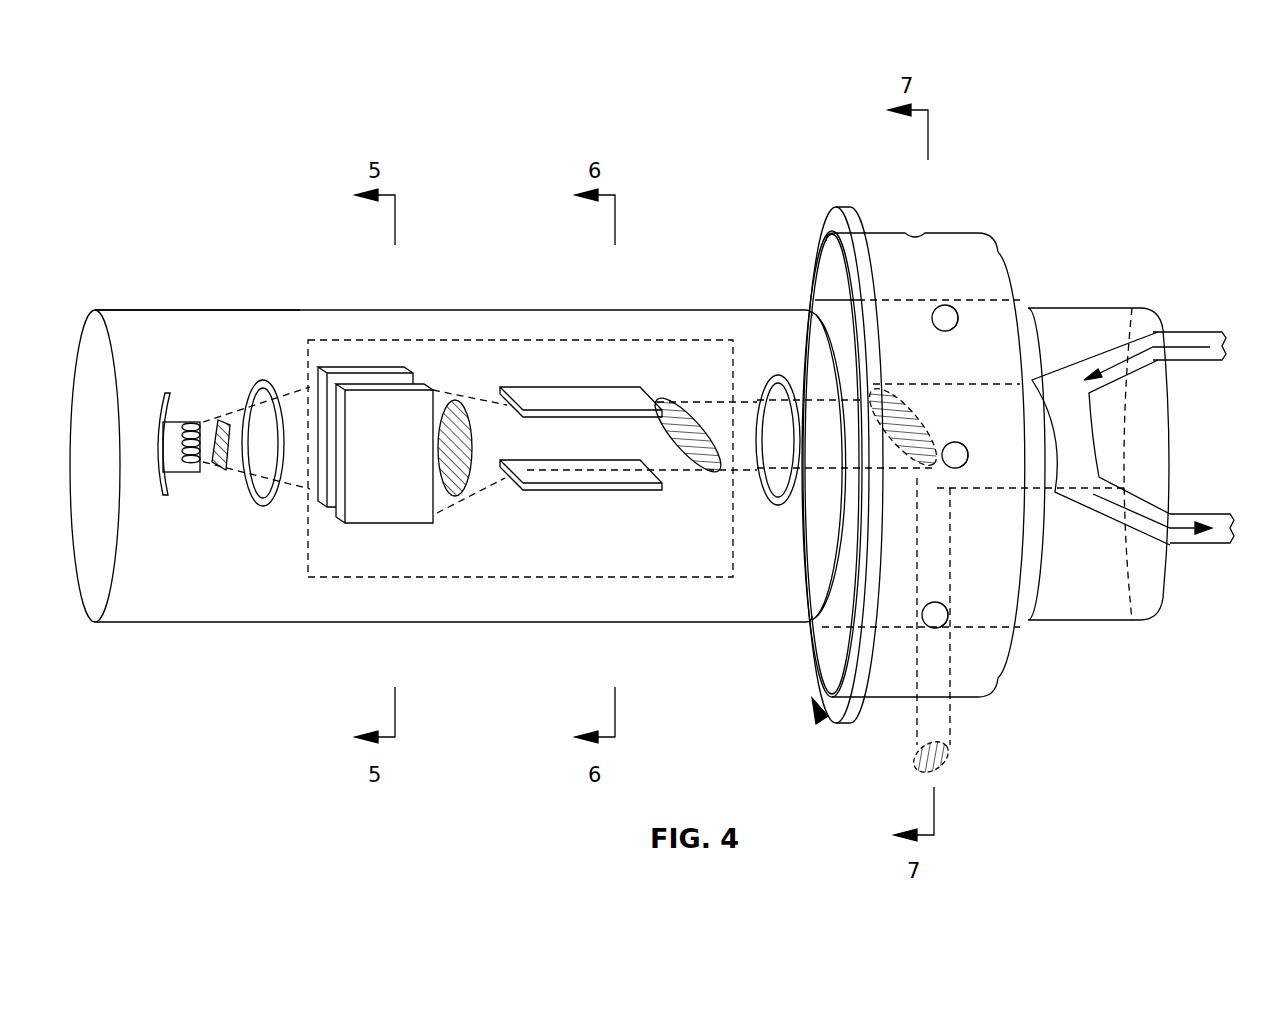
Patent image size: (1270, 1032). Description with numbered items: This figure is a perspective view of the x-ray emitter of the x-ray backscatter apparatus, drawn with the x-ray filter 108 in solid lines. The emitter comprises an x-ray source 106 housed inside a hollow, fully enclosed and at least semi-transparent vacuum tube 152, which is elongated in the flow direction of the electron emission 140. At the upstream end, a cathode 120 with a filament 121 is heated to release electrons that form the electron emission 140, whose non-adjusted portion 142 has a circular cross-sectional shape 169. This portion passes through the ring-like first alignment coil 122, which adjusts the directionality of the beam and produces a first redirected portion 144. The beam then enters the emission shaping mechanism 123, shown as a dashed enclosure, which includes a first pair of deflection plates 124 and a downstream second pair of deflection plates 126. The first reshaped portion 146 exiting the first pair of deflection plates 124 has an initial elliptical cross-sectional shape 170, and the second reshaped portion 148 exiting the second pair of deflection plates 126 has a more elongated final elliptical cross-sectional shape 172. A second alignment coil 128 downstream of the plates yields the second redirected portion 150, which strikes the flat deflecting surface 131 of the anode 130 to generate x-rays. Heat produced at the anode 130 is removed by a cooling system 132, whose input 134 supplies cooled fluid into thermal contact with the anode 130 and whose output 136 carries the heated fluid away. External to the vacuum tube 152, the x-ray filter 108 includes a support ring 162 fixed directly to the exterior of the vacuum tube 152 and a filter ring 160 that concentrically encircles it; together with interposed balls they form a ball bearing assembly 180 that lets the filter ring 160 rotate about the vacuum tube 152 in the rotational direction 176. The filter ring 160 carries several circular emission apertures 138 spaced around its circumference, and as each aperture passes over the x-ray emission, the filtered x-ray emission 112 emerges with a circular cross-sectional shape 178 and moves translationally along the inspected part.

The x-ray source 106 is at (152, 545).
The vacuum tube 152 is at (168, 318).
The second alignment coil 128 is at (772, 379).
The cathode 120 is at (172, 388).
The non-adjusted portion 142 is at (208, 475).
The filament 121 is at (200, 422).
The first alignment coil 122 is at (265, 382).
The first redirected portion 144 is at (297, 473).
The circular cross-sectional shape 169 is at (250, 475).
The emission shaping mechanism 123 is at (386, 580).
The first pair of deflection plates 124 is at (352, 370).
The first reshaped portion 146 is at (460, 505).
The initial elliptical cross-sectional shape 170 is at (467, 480).
The second pair of deflection plates 126 is at (525, 387).
The electron emission 140 is at (478, 380).
The second reshaped portion 148 is at (685, 472).
The final elliptical cross-sectional shape 172 is at (713, 472).
The second redirected portion 150 is at (830, 475).
The x-ray filter 108 is at (813, 226).
The rotational direction 176 is at (826, 236).
The support ring 162 is at (817, 268).
The filter ring 160 is at (958, 233).
The ball bearing assembly 180 is at (1022, 192).
The anode 130 is at (975, 388).
The deflecting surface 131 is at (917, 478).
The cooling system 132 is at (1085, 352).
The input 134 is at (1190, 338).
The output 136 is at (1212, 543).
The emission apertures 138 is at (914, 233).
The filtered x-ray emission 112 is at (948, 717).
The circular cross-sectional shape 178 is at (912, 768).